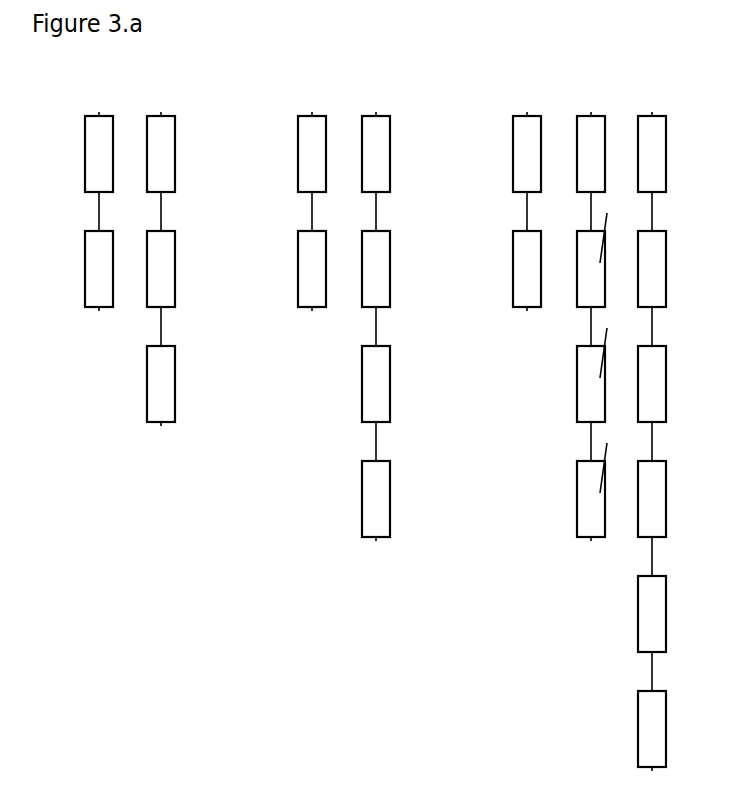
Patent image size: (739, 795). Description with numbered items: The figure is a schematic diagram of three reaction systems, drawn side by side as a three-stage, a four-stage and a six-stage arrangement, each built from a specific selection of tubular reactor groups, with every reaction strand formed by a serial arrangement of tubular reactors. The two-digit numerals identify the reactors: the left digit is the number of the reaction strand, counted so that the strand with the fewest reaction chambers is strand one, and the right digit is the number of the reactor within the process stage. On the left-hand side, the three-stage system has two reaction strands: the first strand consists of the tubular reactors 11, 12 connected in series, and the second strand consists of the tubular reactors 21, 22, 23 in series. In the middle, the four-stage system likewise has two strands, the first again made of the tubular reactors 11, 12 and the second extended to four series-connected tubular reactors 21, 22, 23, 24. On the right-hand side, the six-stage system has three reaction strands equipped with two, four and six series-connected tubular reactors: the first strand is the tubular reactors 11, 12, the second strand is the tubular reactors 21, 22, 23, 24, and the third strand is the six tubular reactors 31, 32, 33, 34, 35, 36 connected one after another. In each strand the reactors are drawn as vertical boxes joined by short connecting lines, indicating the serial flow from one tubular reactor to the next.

The tubular reactor 11 is at (86, 157).
The tubular reactor 12 is at (88, 271).
The tubular reactor 21 is at (175, 153).
The tubular reactor 22 is at (175, 266).
The tubular reactor 23 is at (175, 381).
The tubular reactor 24 is at (390, 496).
The tubular reactor 31 is at (666, 153).
The tubular reactor 32 is at (666, 268).
The tubular reactor 33 is at (666, 381).
The tubular reactor 34 is at (666, 497).
The tubular reactor 35 is at (666, 611).
The tubular reactor 36 is at (666, 725).